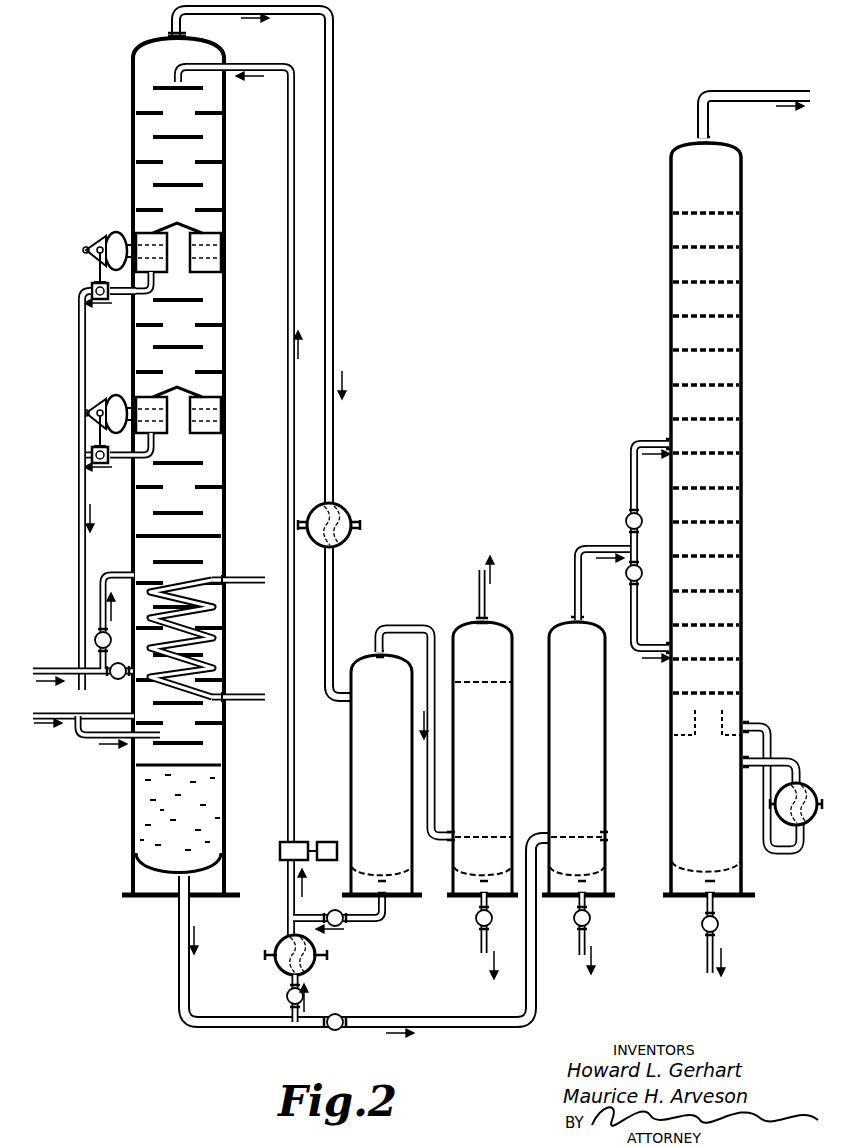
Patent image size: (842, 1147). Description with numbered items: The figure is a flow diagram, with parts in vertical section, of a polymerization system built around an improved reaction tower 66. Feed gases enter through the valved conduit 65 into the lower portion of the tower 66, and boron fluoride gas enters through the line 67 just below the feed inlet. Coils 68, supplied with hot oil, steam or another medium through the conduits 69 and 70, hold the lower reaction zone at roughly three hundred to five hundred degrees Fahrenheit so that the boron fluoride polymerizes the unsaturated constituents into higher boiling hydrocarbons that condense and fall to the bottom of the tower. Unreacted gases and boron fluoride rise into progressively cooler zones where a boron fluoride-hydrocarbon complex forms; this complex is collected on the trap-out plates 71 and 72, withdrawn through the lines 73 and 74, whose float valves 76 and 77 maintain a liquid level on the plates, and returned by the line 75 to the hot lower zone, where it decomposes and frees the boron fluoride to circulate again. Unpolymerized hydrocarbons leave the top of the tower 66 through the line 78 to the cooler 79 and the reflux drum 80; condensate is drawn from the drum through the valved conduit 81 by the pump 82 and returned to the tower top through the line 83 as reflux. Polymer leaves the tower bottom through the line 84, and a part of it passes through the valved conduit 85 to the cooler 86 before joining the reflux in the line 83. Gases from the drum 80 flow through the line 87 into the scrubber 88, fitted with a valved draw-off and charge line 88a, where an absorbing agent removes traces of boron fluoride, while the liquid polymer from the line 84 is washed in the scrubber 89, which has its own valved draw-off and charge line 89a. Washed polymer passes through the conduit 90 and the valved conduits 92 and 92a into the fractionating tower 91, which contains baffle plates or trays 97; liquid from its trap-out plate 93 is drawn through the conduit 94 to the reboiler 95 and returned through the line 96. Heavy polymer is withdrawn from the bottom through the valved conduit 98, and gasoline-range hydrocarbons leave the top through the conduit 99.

The valved conduit 65 is at (100, 662).
The tower 66 is at (130, 64).
The line 67 is at (72, 722).
The coils 68 is at (212, 622).
The conduit 69 is at (250, 704).
The conduit 70 is at (246, 578).
The trap-out plate 71 is at (205, 420).
The trap-out plate 72 is at (205, 258).
The line 73 is at (115, 462).
The line 74 is at (115, 300).
The line 75 is at (82, 386).
The float valve 76 is at (86, 410).
The float valve 77 is at (102, 240).
The line 78 is at (334, 72).
The cooler 79 is at (341, 512).
The reflux drum 80 is at (357, 755).
The valved conduit 81 is at (366, 924).
The pump 82 is at (289, 842).
The line 83 is at (286, 183).
The line 84 is at (179, 968).
The valved conduit 85 is at (285, 977).
The cooler 86 is at (282, 943).
The line 87 is at (414, 628).
The scrubber 88 is at (489, 632).
The valved draw-off and charge line 88a is at (481, 941).
The scrubber 89 is at (559, 633).
The valved draw-off and charge line 89a is at (587, 940).
The conduit 90 is at (613, 545).
The fractionating tower 91 is at (671, 186).
The valved conduit 92 is at (630, 470).
The valved conduit 92a is at (633, 626).
The trap-out plate 93 is at (729, 713).
The conduit 94 is at (767, 735).
The reboiler 95 is at (796, 849).
The line 96 is at (792, 764).
The baffle plates or trays 97 is at (671, 348).
The valved conduit 98 is at (705, 950).
The conduit 99 is at (697, 104).